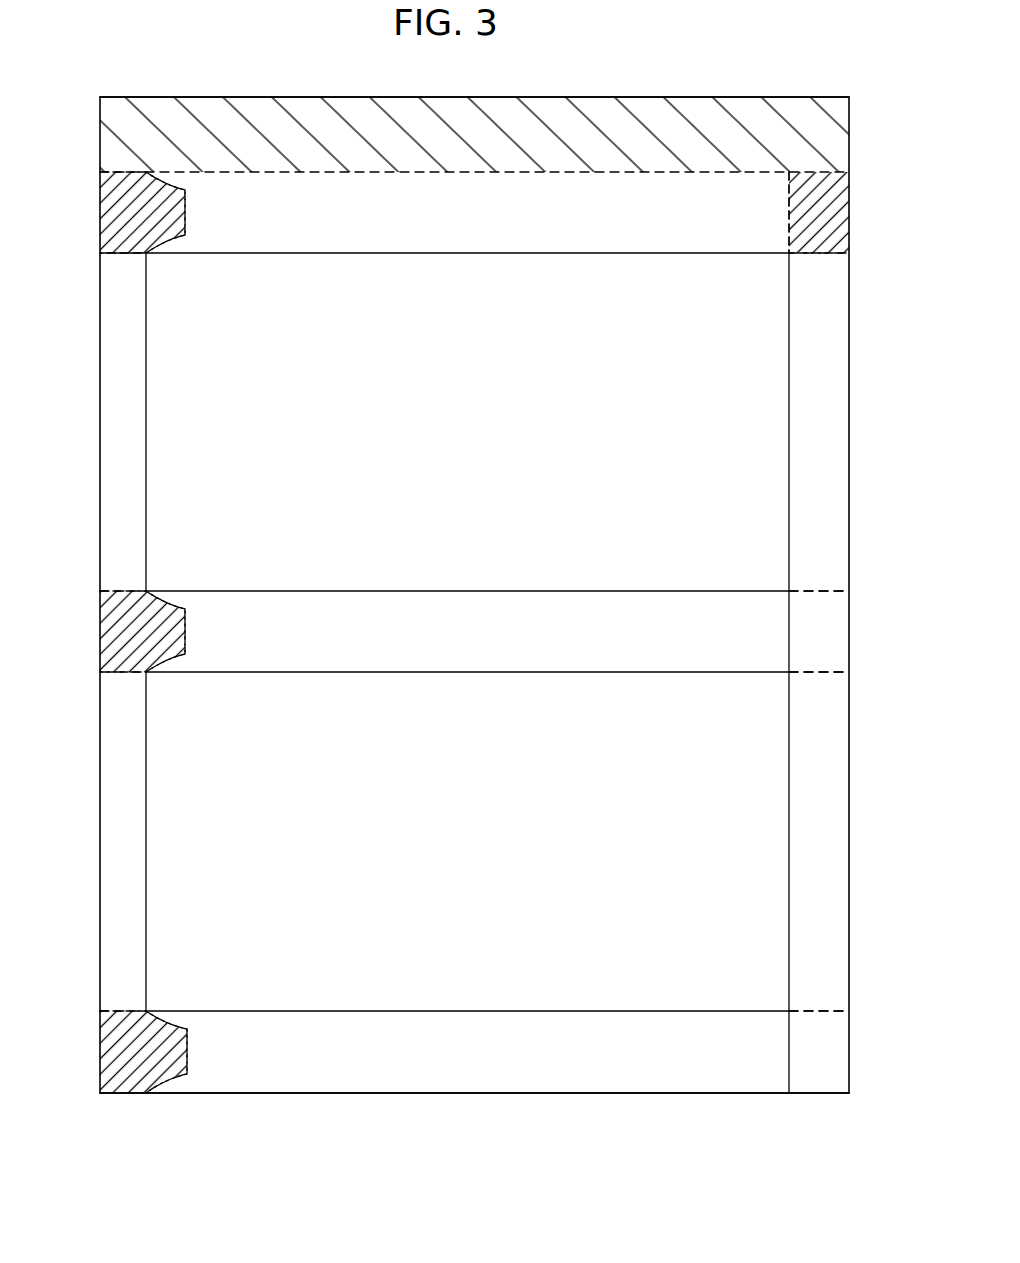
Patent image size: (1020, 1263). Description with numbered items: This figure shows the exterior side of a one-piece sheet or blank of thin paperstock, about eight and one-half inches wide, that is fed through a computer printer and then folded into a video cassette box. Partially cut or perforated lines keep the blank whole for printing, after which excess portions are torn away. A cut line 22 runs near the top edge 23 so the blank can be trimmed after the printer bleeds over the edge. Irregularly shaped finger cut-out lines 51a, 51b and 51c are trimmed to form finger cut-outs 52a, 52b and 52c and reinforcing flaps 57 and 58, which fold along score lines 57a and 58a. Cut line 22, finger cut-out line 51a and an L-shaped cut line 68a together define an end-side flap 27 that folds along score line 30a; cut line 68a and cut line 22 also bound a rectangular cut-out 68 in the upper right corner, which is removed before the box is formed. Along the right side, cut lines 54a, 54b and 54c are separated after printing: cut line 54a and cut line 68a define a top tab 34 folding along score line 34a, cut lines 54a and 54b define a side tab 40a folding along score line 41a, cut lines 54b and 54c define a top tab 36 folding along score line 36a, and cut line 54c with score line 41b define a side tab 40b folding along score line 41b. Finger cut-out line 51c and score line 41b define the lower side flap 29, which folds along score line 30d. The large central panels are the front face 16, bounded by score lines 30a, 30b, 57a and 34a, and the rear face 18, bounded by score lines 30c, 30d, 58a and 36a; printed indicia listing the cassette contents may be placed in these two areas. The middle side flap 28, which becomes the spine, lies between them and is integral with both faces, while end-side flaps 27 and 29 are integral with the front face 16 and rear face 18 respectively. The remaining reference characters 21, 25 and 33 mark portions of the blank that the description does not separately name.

The front face 16 is at (160, 305).
The rear face 18 is at (160, 755).
The duct wall 21 is at (102, 411).
The cut line 22 is at (311, 172).
The top edge 23 is at (564, 97).
The bottom surface 25 is at (445, 1097).
The end-side flap 27 is at (638, 190).
The side flap 28 is at (599, 655).
The side flap 29 is at (578, 1070).
The score line 30a is at (481, 262).
The score line 30b is at (469, 590).
The score line 30c is at (470, 673).
The score line 30d is at (469, 1011).
The side wall 33 is at (850, 748).
The top tab 34 is at (832, 362).
The score line 34a is at (790, 473).
The top tab 36 is at (832, 822).
The score line 36a is at (790, 905).
The side tab 40a is at (830, 627).
The side tab 40b is at (830, 1050).
The score line 41a is at (788, 628).
The score line 41b is at (788, 1050).
The finger cut-out line 51a is at (186, 205).
The finger cut-out line 51b is at (186, 628).
The finger cut-out line 51c is at (188, 1048).
The finger cut-out 52a is at (120, 211).
The finger cut-out 52b is at (120, 634).
The finger cut-out 52c is at (120, 1056).
The cut line 54a is at (820, 590).
The cut line 54b is at (820, 672).
The cut line 54c is at (820, 1010).
The reinforcing flap 57 is at (117, 466).
The score line 57a is at (147, 365).
The reinforcing flap 58 is at (117, 902).
The score line 58a is at (147, 813).
The rectangular cut-out 68 is at (832, 205).
The L-shaped cut line 68a is at (790, 211).